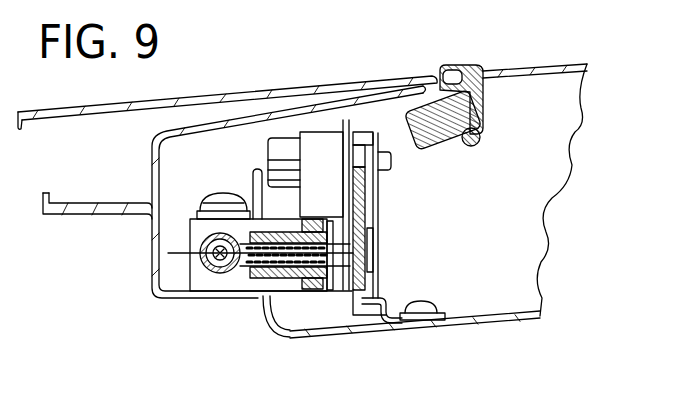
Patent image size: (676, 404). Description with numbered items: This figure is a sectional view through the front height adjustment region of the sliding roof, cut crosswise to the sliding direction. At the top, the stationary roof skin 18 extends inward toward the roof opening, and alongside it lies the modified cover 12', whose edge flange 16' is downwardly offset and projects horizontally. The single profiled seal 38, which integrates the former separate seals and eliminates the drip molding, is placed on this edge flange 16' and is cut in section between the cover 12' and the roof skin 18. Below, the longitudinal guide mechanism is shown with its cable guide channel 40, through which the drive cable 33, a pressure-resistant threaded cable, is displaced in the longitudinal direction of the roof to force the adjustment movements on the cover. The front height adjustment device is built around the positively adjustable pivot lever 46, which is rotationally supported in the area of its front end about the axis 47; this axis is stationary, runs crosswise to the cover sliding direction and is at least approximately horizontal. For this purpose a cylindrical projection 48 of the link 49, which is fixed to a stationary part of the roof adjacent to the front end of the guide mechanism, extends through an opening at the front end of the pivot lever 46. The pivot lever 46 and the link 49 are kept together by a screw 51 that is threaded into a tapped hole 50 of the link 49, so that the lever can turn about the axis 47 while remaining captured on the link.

The stationary roof skin 18 is at (228, 93).
The pivot lever 46 is at (317, 155).
The profiled seal 38 is at (451, 78).
The cover 12' is at (535, 42).
The edge flange 16' is at (445, 201).
The axis 47 is at (168, 253).
The cable guide channel 40 is at (172, 299).
The drive cable 33 is at (215, 292).
The tapped hole 50 is at (260, 278).
The link 49 is at (282, 292).
The cylindrical projection 48 is at (298, 281).
The screw 51 is at (355, 265).